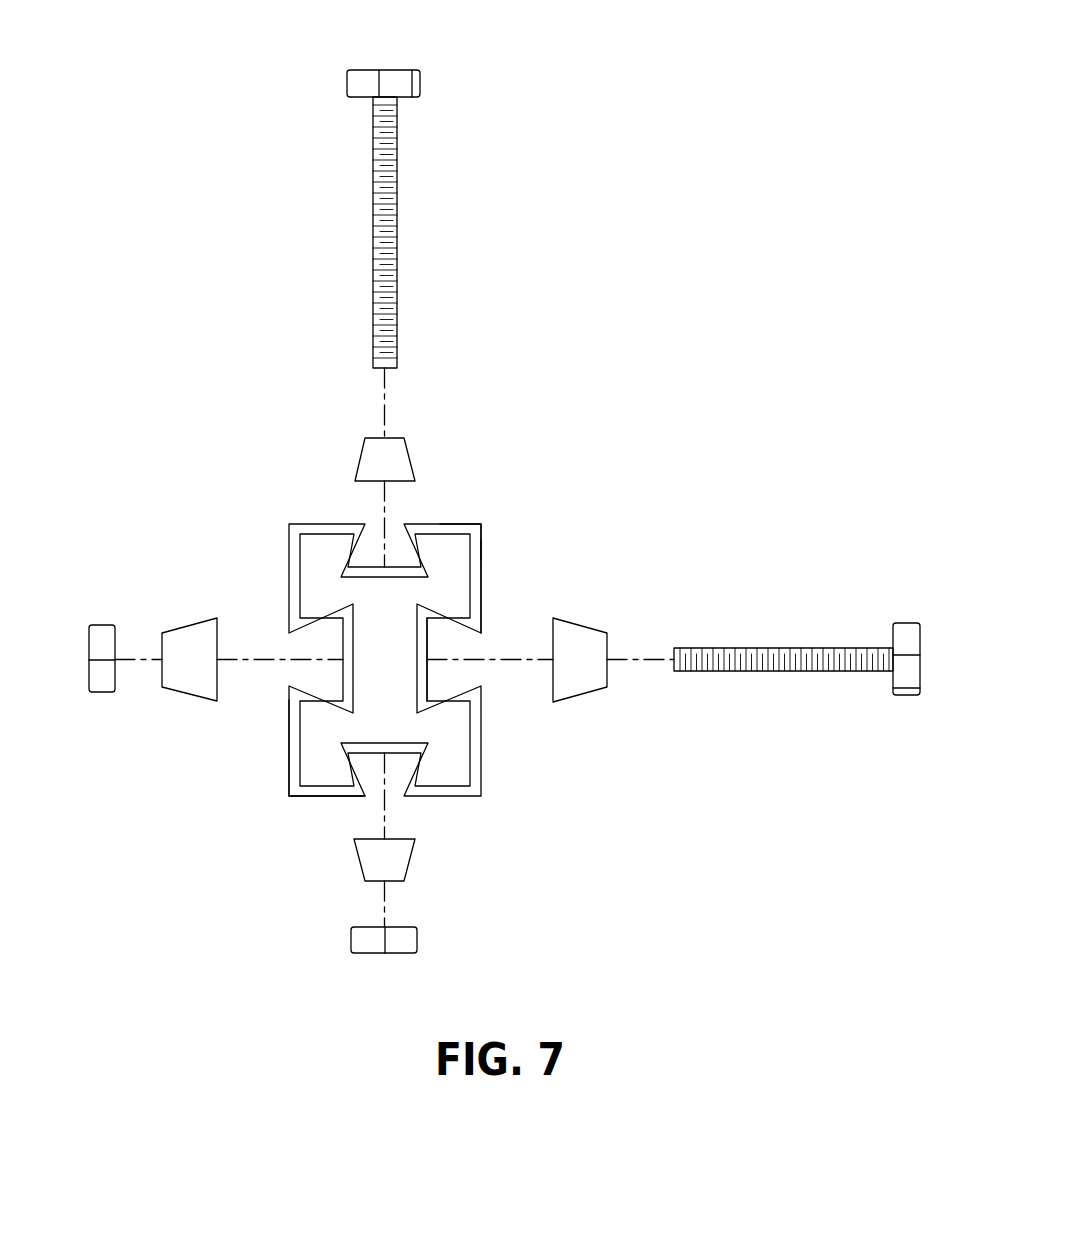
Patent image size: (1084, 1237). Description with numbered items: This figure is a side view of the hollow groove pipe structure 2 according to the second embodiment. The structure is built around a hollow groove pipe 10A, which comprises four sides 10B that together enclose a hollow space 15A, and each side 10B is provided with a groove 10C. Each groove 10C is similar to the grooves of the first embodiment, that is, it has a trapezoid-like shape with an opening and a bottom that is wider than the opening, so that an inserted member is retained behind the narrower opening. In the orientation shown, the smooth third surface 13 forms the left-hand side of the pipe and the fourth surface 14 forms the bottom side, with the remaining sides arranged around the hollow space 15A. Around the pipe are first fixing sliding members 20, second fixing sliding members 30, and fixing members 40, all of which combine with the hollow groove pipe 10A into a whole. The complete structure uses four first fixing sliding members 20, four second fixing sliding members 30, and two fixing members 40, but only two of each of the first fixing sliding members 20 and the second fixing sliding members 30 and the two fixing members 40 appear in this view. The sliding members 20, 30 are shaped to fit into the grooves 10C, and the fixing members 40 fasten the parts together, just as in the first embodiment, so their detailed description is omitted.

The hollow groove pipe structure 2 is at (782, 95).
The hollow groove pipe 10A is at (300, 505).
The side 10B is at (480, 575).
The groove 10C is at (467, 675).
The third surface 13 is at (288, 743).
The fourth surface 14 is at (327, 797).
The hollow space 15A is at (475, 528).
The first fixing sliding member 20 is at (400, 458).
The second fixing sliding member 30 is at (190, 635).
The fixing member 40 is at (382, 70).